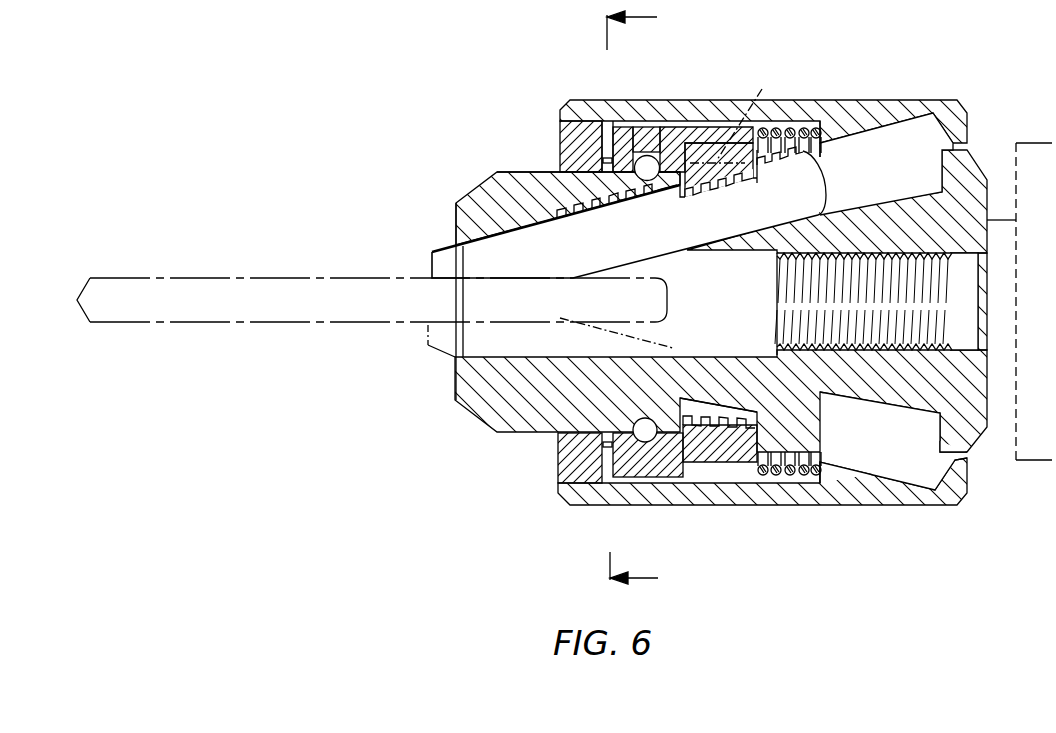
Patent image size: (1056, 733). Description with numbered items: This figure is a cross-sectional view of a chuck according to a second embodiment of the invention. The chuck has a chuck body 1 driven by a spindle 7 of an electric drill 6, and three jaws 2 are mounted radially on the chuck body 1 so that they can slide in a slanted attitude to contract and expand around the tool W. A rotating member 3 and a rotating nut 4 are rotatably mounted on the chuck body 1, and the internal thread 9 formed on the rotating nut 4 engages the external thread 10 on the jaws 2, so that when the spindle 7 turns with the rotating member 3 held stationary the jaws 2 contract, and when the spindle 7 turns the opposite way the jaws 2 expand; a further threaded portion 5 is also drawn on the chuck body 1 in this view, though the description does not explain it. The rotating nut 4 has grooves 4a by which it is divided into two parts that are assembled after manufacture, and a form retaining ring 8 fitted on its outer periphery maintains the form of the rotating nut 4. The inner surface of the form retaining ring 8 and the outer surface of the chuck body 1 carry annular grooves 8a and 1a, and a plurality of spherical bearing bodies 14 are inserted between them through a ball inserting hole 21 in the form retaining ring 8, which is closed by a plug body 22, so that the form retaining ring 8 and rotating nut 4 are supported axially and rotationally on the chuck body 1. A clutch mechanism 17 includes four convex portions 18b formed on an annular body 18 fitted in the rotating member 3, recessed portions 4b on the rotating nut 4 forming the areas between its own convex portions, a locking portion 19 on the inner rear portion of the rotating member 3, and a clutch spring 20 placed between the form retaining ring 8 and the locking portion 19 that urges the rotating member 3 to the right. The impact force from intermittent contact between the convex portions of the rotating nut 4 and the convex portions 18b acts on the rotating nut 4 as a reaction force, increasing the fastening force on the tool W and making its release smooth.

The chuck body 1 is at (456, 203).
The annular groove 1a is at (643, 421).
The jaws 2 is at (432, 258).
The rotating member 3 is at (793, 497).
The rotating nut 4 is at (716, 143).
The grooves 4a is at (732, 118).
The recessed portions 4b is at (613, 128).
The threaded nut 5 is at (890, 253).
The electric drill 6 is at (1025, 462).
The spindle 7 is at (1011, 396).
The form retaining ring 8 is at (677, 132).
The annular groove 8a is at (640, 441).
The internal thread 9 is at (753, 183).
The external thread 10 is at (510, 173).
The spherical bearing bodies 14 is at (654, 441).
The clutch mechanism 17 is at (586, 152).
The annular body 18 is at (580, 120).
The convex portions 18b is at (607, 142).
The locking portion 19 is at (836, 132).
The clutch spring 20 is at (816, 128).
The ball inserting hole 21 is at (636, 126).
The plug body 22 is at (651, 131).
The tool W is at (193, 310).